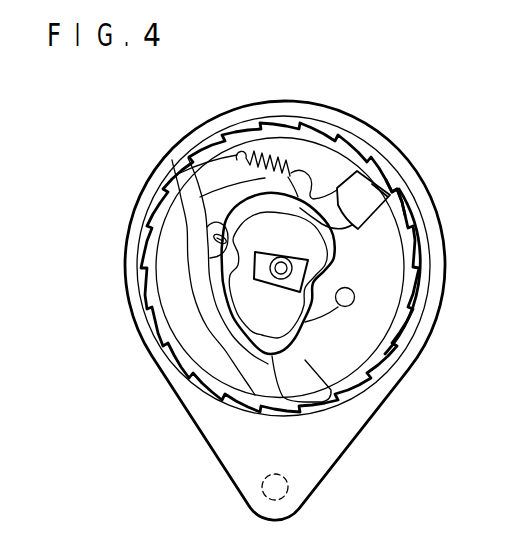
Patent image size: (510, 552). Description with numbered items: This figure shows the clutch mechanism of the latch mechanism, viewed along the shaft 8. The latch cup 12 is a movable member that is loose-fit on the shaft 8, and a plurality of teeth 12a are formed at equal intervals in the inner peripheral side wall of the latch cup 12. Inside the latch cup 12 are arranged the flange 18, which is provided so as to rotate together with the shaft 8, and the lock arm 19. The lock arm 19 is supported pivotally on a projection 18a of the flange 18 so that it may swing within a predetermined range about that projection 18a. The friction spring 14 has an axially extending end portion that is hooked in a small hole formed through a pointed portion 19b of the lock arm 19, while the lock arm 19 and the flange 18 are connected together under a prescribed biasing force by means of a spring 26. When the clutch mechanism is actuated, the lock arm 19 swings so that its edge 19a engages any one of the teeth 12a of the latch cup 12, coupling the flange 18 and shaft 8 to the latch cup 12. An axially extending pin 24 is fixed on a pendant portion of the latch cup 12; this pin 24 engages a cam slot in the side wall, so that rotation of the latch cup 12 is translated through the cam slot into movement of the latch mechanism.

The shaft 8 is at (300, 268).
The latch cup 12 is at (436, 318).
The teeth 12a is at (428, 262).
The friction spring 14 is at (217, 234).
The flange 18 is at (378, 184).
The projection 18a is at (354, 304).
The lock arm 19 is at (380, 237).
The edge 19a is at (382, 208).
The pointed portion 19b is at (210, 257).
The pin 24 is at (289, 485).
The spring 26 is at (268, 170).